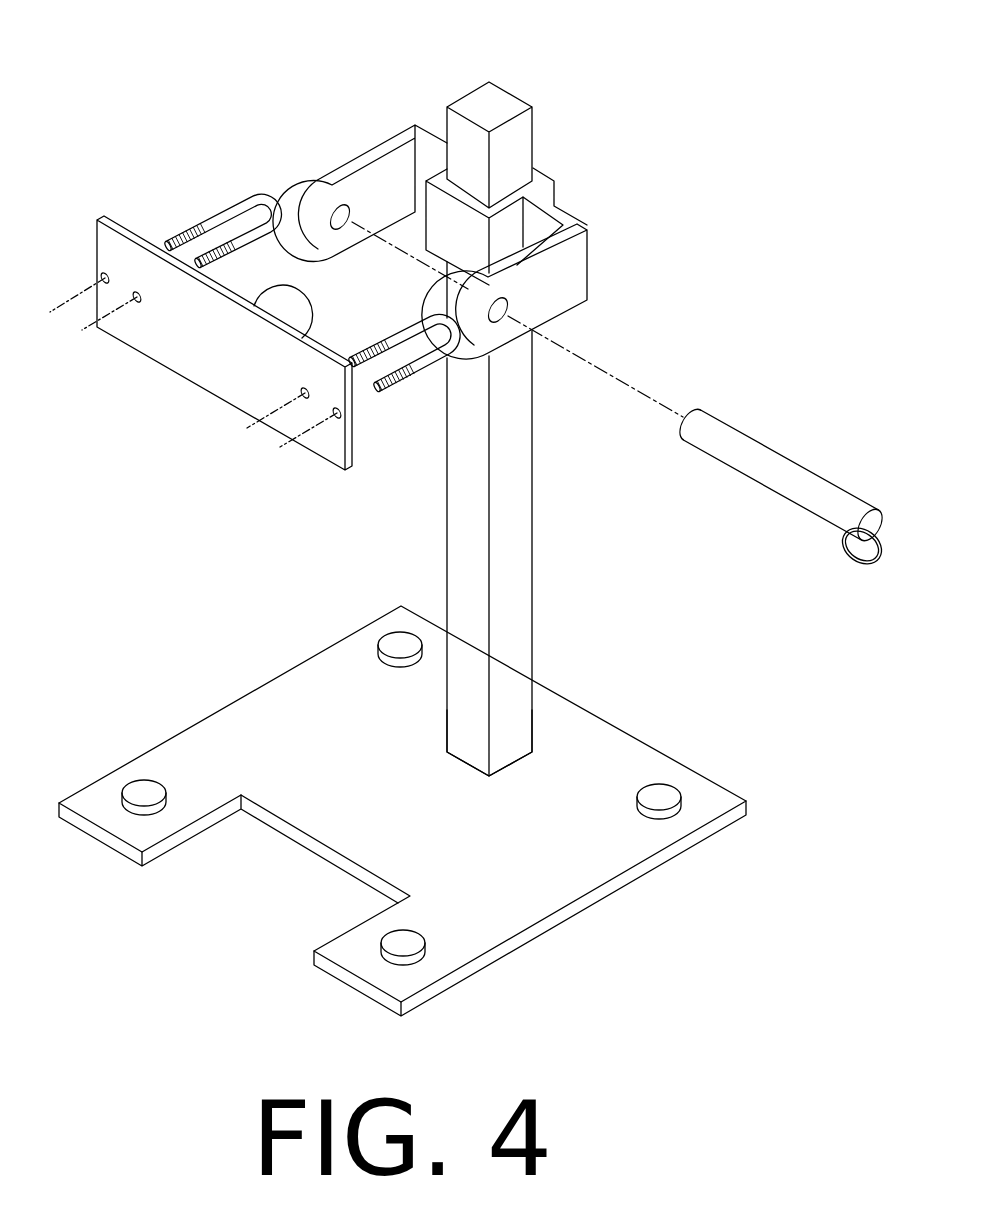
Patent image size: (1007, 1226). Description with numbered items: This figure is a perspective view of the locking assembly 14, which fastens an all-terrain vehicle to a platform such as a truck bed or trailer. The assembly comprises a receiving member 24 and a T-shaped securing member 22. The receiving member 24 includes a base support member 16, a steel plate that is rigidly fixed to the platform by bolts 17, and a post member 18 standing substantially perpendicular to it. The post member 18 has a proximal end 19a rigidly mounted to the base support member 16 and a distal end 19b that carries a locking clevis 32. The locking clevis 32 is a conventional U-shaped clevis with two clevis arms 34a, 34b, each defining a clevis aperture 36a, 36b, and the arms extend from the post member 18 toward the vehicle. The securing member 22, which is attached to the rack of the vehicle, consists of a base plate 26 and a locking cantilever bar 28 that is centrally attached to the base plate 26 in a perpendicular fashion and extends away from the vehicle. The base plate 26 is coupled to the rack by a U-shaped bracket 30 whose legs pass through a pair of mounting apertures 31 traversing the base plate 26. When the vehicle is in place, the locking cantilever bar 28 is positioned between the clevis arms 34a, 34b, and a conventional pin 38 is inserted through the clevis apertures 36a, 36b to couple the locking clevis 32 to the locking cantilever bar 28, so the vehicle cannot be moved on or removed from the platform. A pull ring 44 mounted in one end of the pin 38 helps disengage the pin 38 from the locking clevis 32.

The locking assembly 14 is at (817, 155).
The base support member 16 is at (475, 858).
The bolts 17 is at (144, 790).
The post member 18 is at (520, 590).
The proximal end 19a is at (540, 727).
The distal end 19b is at (539, 152).
The securing member 22 is at (240, 317).
The receiving member 24 is at (576, 306).
The base plate 26 is at (217, 380).
The locking cantilever bar 28 is at (303, 316).
The U-shaped bracket 30 is at (229, 207).
The mounting apertures 31 is at (101, 278).
The locking clevis 32 is at (554, 208).
The clevis arm 34a is at (540, 308).
The clevis arm 34b is at (355, 178).
The clevis aperture 36a is at (502, 321).
The clevis aperture 36b is at (368, 161).
The pin 38 is at (758, 457).
The pull ring 44 is at (840, 547).